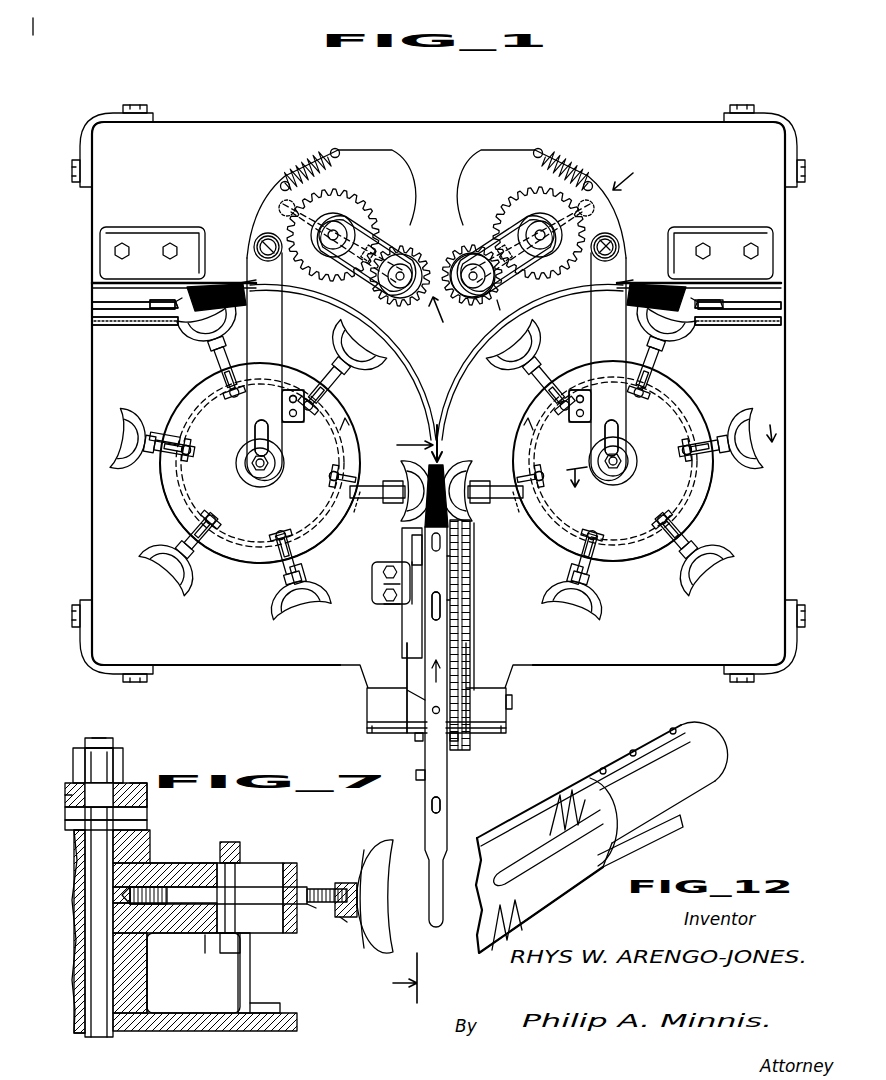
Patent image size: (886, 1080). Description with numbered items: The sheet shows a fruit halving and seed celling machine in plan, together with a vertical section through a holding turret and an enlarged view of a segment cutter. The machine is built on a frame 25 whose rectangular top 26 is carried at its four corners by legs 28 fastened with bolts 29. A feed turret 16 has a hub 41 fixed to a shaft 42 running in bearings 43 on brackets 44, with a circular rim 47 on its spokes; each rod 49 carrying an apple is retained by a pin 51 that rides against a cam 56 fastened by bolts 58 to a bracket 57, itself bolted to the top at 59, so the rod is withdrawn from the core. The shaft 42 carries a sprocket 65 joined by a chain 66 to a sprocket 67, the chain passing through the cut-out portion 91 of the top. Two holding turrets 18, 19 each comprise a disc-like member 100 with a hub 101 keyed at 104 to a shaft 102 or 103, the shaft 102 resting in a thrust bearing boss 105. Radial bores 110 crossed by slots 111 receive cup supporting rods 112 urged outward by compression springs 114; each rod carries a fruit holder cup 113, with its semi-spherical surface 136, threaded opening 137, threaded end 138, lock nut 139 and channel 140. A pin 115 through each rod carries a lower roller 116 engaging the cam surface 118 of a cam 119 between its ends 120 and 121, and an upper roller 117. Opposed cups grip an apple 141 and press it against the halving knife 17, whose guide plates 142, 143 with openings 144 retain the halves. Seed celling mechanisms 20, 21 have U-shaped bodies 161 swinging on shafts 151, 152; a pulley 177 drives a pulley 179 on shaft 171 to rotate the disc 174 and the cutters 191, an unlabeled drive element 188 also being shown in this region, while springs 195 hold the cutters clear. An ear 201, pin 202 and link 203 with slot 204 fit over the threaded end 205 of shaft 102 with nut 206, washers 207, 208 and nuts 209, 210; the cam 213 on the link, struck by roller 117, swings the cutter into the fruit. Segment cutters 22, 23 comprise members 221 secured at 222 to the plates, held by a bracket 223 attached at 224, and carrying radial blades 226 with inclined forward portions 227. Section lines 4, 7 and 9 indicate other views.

In FIG. 1, the section line 4 is at (409, 715).
In FIG. 1, the section line 7 is at (671, 442).
In FIG. 1, the section line 9 is at (526, 254).
In FIG. 1, the feed conveyor or turret 16 is at (447, 770).
In FIG. 1, the halving knife 17 is at (446, 457).
In FIG. 1, the fruit holding conveyor or turret 18 is at (712, 500).
In FIG. 1, the fruit holding conveyor or turret 19 is at (162, 500).
In FIG. 1, the seed celling mechanism 20 is at (525, 212).
In FIG. 1, the seed celling mechanism 21 is at (352, 208).
In FIG. 1, the segment cutter 22 is at (758, 312).
In FIG. 12, the segment cutter 22 is at (598, 876).
In FIG. 1, the segment cutter 23 is at (153, 324).
In FIG. 1, the supporting structure or frame 25 is at (645, 122).
In FIG. 1, the top 26 is at (188, 164).
In FIG. 7, the top 26 is at (230, 1030).
In FIG. 1, the legs 28 is at (105, 130).
In FIG. 1, the bolts 29 is at (138, 105).
In FIG. 1, the hub 41 is at (418, 739).
In FIG. 1, the shaft 42 is at (513, 702).
In FIG. 1, the bearings 43 is at (367, 713).
In FIG. 1, the brackets 44 is at (367, 673).
In FIG. 1, the circular rim or band 47 is at (447, 795).
In FIG. 1, the rod 49 is at (442, 604).
In FIG. 1, the pin 51 is at (412, 653).
In FIG. 1, the cam 56 is at (410, 543).
In FIG. 1, the bracket 57 is at (412, 557).
In FIG. 1, the bolts 58 is at (382, 577).
In FIG. 1, the bolts 59 is at (376, 567).
In FIG. 1, the sprocket 65 is at (460, 738).
In FIG. 1, the chain 66 is at (470, 561).
In FIG. 1, the sprocket 67 is at (476, 536).
In FIG. 1, the cut-out portion 91 is at (474, 575).
In FIG. 1, the annular disc-like body or member 100 is at (715, 470).
In FIG. 7, the annular disc-like body or member 100 is at (198, 863).
In FIG. 1, the hub 101 is at (283, 452).
In FIG. 7, the hub 101 is at (150, 849).
In FIG. 1, the shaft 102 is at (612, 478).
In FIG. 7, the shaft 102 is at (97, 1040).
In FIG. 1, the shaft 103 is at (262, 482).
In FIG. 7, the key 104 is at (150, 951).
In FIG. 7, the boss 105 is at (166, 1003).
In FIG. 7, the horizontal bore 110 is at (205, 936).
In FIG. 1, the elongated slot 111 is at (232, 398).
In FIG. 7, the elongated slot 111 is at (266, 868).
In FIG. 1, the cup supporting rod 112 is at (216, 396).
In FIG. 7, the cup supporting rod 112 is at (306, 886).
In FIG. 1, the fruit holder cup 113 is at (110, 440).
In FIG. 7, the fruit holder cup 113 is at (385, 848).
In FIG. 7, the compression spring 114 is at (150, 886).
In FIG. 7, the pin 115 is at (235, 917).
In FIG. 7, the roller 116 is at (240, 947).
In FIG. 1, the roller 117 is at (222, 466).
In FIG. 7, the roller 117 is at (240, 848).
In FIG. 7, the cam surface 118 is at (238, 973).
In FIG. 1, the cam 119 is at (180, 479).
In FIG. 7, the cam 119 is at (250, 977).
In FIG. 1, the end of the cam 120 is at (295, 378).
In FIG. 1, the end of the cam 121 is at (522, 538).
In FIG. 7, the semi-spherical surface 136 is at (358, 897).
In FIG. 7, the internally threaded opening 137 is at (347, 922).
In FIG. 7, the threaded end 138 is at (316, 908).
In FIG. 7, the lock nut 139 is at (342, 883).
In FIG. 1, the forwardly extending channel 140 is at (310, 600).
In FIG. 1, the apple 141 is at (378, 482).
In FIG. 1, the guide plate 142 is at (440, 349).
In FIG. 12, the guide plate 142 is at (531, 825).
In FIG. 1, the guide plate 143 is at (348, 362).
In FIG. 1, the elongated opening 144 is at (548, 310).
In FIG. 1, the shaft 151 is at (470, 262).
In FIG. 1, the shaft 152 is at (402, 262).
In FIG. 1, the U-shaped body 161 is at (268, 200).
In FIG. 1, the shaft 171 is at (355, 226).
In FIG. 1, the disc 174 is at (356, 240).
In FIG. 1, the pulley 177 is at (508, 313).
In FIG. 1, the pulley 179 is at (606, 255).
In FIG. 1, the shaft 188 is at (415, 252).
In FIG. 1, the knife or cutter 191 is at (283, 205).
In FIG. 1, the spring 195 is at (304, 168).
In FIG. 1, the ear 201 is at (256, 239).
In FIG. 1, the pin 202 is at (258, 246).
In FIG. 1, the link 203 is at (272, 313).
In FIG. 7, the link 203 is at (147, 800).
In FIG. 1, the elongated slot 204 is at (255, 436).
In FIG. 7, the elongated slot 204 is at (66, 794).
In FIG. 7, the upper threaded end 205 is at (100, 738).
In FIG. 7, the nut 206 is at (147, 825).
In FIG. 7, the washer 207 is at (147, 813).
In FIG. 7, the washer 208 is at (70, 790).
In FIG. 7, the nut 209 is at (120, 762).
In FIG. 7, the nut 210 is at (88, 746).
In FIG. 1, the cam 213 is at (318, 386).
In FIG. 1, the member 221 is at (105, 322).
In FIG. 12, the member 221 is at (702, 752).
In FIG. 1, the securing point 222 is at (110, 284).
In FIG. 12, the securing point 222 is at (626, 748).
In FIG. 1, the bracket 223 is at (100, 240).
In FIG. 1, the attachment 224 is at (170, 243).
In FIG. 1, the blades 226 is at (100, 303).
In FIG. 12, the blades 226 is at (504, 893).
In FIG. 1, the forwardly extending portion 227 is at (252, 282).
In FIG. 12, the forwardly extending portion 227 is at (500, 870).